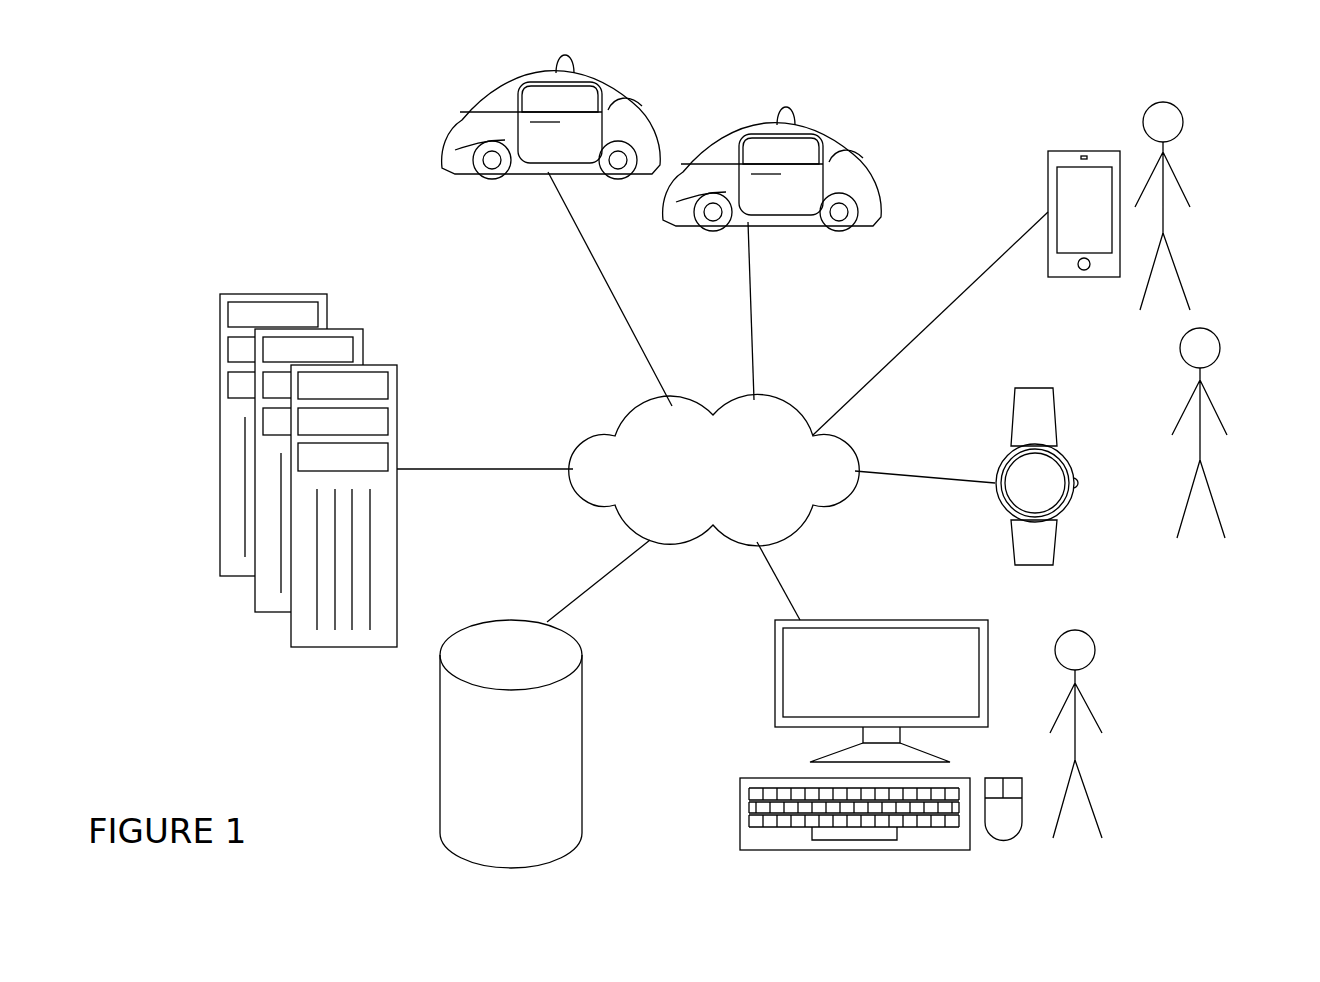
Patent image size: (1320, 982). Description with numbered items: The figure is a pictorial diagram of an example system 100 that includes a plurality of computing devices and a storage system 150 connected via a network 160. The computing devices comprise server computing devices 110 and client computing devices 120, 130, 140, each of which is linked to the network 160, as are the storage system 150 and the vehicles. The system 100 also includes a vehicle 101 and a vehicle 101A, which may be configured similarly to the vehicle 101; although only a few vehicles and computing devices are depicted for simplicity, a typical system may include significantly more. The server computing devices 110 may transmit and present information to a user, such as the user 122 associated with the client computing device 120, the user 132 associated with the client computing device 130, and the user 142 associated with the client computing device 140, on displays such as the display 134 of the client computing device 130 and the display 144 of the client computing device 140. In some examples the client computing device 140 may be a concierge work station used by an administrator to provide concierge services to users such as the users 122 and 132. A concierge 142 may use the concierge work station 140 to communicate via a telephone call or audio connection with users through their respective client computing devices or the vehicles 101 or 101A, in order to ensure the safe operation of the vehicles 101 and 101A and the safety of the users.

The system 100 is at (187, 790).
The vehicle 101 is at (440, 148).
The vehicle 101A is at (882, 199).
The server computing devices 110 is at (397, 410).
The client computing device 120 is at (1048, 152).
The user 122 is at (1165, 217).
The client computing device 130 is at (1029, 474).
The user 132 is at (1203, 447).
The display 134 is at (1075, 500).
The client computing device (concierge work station) 140 is at (909, 701).
The concierge 142 is at (1080, 748).
The display 144 is at (978, 645).
The storage system 150 is at (583, 753).
The network 160 is at (578, 497).